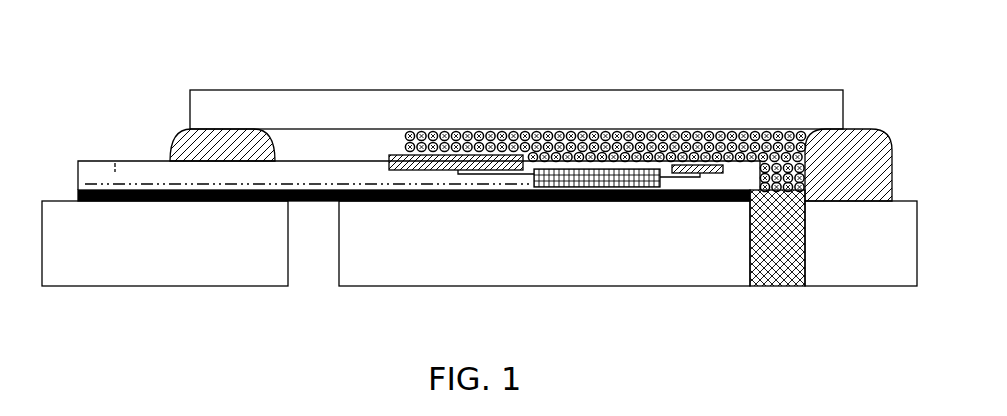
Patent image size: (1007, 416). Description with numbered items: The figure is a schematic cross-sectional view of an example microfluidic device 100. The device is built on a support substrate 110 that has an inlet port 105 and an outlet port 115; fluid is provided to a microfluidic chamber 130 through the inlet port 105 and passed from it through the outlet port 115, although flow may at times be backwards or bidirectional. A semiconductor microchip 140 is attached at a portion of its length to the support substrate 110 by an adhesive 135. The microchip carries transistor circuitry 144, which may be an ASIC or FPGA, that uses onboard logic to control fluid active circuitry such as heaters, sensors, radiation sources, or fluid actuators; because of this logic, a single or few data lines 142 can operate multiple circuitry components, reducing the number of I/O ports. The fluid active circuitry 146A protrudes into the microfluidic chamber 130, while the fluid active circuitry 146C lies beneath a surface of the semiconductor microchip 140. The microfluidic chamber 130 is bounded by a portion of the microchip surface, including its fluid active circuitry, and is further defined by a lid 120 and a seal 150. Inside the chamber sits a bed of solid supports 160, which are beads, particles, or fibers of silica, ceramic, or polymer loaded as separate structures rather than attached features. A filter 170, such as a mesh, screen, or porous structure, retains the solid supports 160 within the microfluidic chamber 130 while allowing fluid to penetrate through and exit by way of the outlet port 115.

The microfluidic device 100 is at (193, 48).
The inlet port 105 is at (312, 290).
The support substrate 110 is at (189, 253).
The outlet port 115 is at (773, 292).
The lid 120 is at (252, 102).
The microfluidic chamber 130 is at (330, 157).
The adhesive 135 is at (98, 188).
The semiconductor microchip 140 is at (365, 177).
The data lines 142 is at (162, 183).
The transistor circuitry 144 is at (608, 178).
The fluid active circuitry 146A is at (402, 167).
The fluid active circuitry 146C is at (692, 170).
The seal 150 is at (853, 147).
The solid supports 160 is at (483, 132).
The filter 170 is at (778, 213).